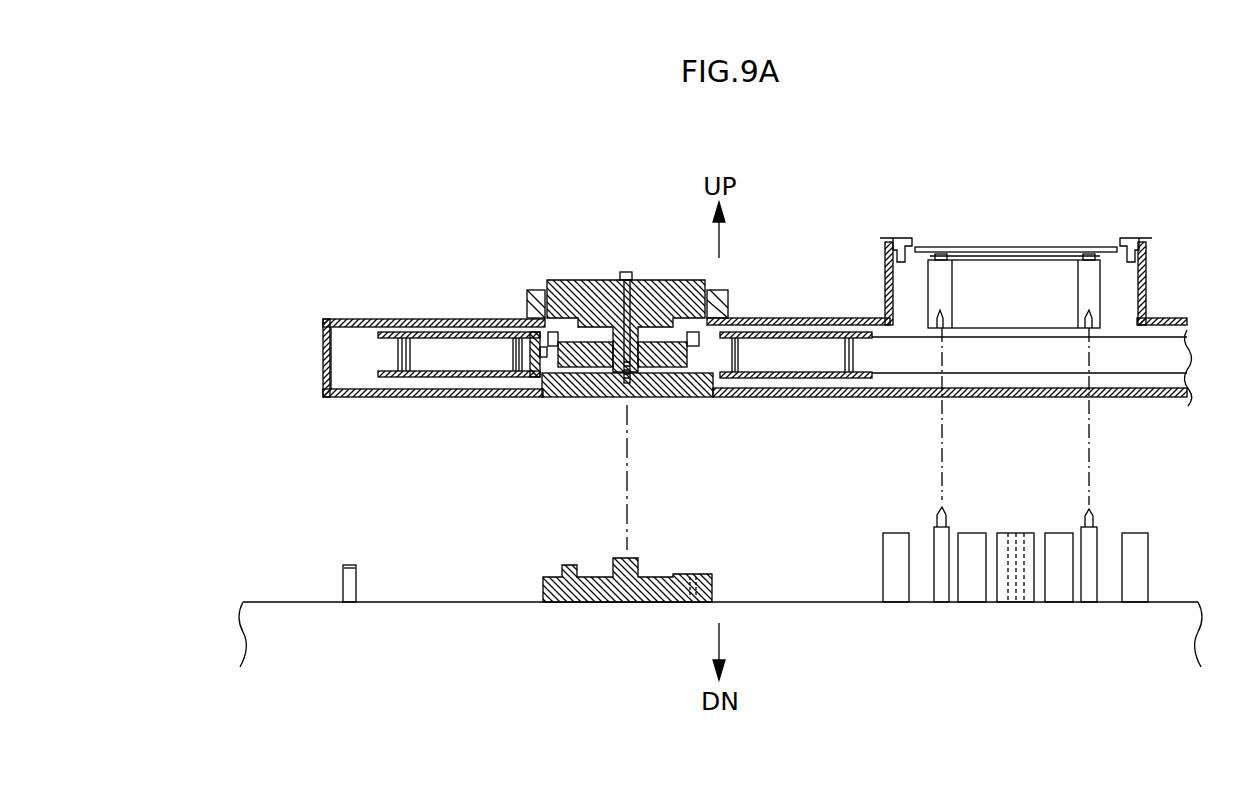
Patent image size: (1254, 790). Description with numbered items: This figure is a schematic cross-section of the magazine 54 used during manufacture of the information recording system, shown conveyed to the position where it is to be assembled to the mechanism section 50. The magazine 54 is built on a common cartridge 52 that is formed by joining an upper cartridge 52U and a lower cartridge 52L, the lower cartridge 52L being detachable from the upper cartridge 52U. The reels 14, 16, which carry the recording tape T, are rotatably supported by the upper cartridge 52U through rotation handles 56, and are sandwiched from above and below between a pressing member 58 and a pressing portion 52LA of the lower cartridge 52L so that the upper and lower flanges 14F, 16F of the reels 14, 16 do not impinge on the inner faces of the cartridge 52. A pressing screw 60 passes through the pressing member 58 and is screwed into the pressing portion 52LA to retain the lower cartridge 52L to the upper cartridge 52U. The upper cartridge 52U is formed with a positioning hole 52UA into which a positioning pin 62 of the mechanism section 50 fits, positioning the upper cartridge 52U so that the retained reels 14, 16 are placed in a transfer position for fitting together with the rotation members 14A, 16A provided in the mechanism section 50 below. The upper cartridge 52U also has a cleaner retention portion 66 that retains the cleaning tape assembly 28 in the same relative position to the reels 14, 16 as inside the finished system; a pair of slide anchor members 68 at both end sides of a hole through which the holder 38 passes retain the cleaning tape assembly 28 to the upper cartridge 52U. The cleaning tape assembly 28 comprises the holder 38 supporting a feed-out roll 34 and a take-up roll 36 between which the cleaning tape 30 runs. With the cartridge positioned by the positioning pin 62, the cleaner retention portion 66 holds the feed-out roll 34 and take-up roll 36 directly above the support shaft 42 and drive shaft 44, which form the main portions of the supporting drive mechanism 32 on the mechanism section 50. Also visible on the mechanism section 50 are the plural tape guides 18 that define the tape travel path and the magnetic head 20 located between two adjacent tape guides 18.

The cartridge 52 is at (509, 333).
The lower cartridge 52L is at (372, 383).
The upper cartridge 52U is at (388, 317).
The positioning hole 52UA is at (352, 393).
The pressing portion 52LA is at (562, 397).
The magazine 54 is at (674, 284).
The rotation handle 56 is at (702, 323).
The pressing member 58 is at (655, 290).
The pressing screw 60 is at (625, 272).
The flange 14F is at (798, 320).
The flange 16F is at (795, 322).
The reel 14 is at (950, 414).
The reel 16 is at (755, 378).
The rotation member 14A is at (659, 555).
The rotation member 16A is at (662, 580).
The recording tape T is at (1007, 360).
The cleaner retention portion 66 is at (1050, 255).
The slide anchor member 68 is at (905, 240).
The cleaning tape assembly 28 is at (1039, 340).
The cleaning tape 30 is at (980, 270).
The feed-out roll 34 is at (960, 283).
The take-up roll 36 is at (1090, 268).
The holder 38 is at (1015, 247).
The mechanism section 50 is at (482, 558).
The positioning pin 62 is at (357, 580).
The tape guide 18 is at (972, 540).
The magnetic head 20 is at (1015, 540).
The supporting drive mechanism 32 is at (1015, 605).
The support shaft 42 is at (942, 590).
The drive shaft 44 is at (1068, 584).